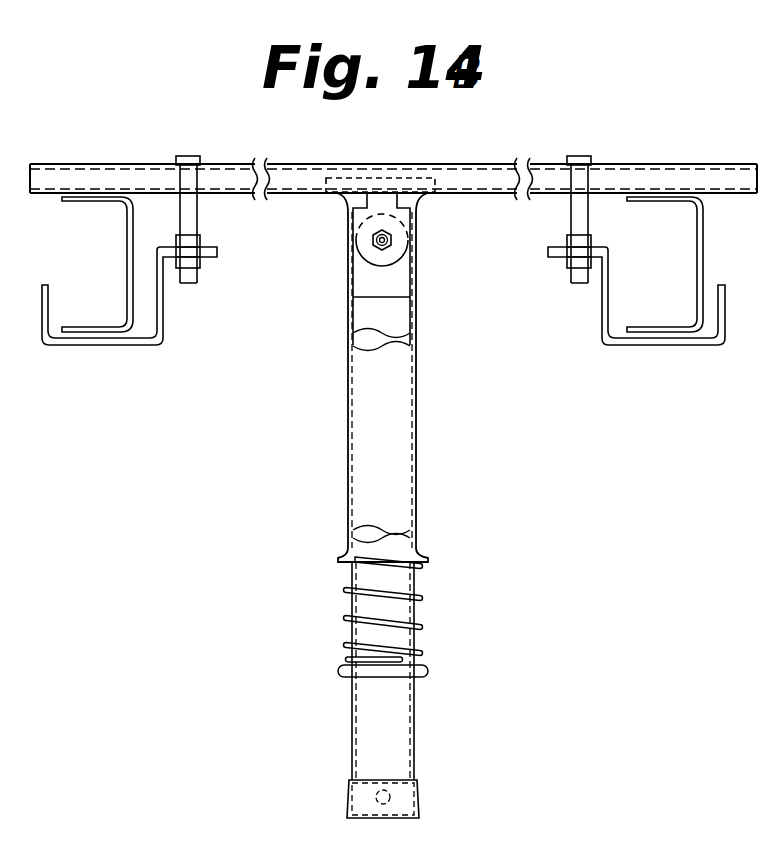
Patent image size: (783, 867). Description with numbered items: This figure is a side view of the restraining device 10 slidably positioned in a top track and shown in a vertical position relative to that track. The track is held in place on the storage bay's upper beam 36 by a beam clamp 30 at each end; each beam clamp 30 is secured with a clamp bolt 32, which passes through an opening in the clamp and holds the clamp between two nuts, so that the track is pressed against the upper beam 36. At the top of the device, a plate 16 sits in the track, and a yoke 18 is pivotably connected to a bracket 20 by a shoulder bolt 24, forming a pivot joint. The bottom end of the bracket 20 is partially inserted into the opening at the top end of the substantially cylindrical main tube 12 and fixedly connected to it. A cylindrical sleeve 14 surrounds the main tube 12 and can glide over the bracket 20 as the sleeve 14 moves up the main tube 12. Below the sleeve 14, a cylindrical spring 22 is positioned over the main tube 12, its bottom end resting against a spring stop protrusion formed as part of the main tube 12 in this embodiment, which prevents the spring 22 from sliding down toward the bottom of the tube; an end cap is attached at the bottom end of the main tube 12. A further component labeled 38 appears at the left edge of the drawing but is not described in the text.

The restraining device 10 is at (437, 750).
The main tube 12 is at (349, 752).
The cylindrical sleeve 14 is at (345, 425).
The plate 16 is at (355, 173).
The yoke 18 is at (408, 203).
The bracket 20 is at (391, 288).
The cylindrical spring 22 is at (425, 601).
The shoulder bolt 24 is at (374, 241).
The beam clamp 30 is at (108, 350).
The clamp bolt 32 is at (197, 289).
The upper beam 36 is at (125, 258).
The support beam 38 is at (46, 198).